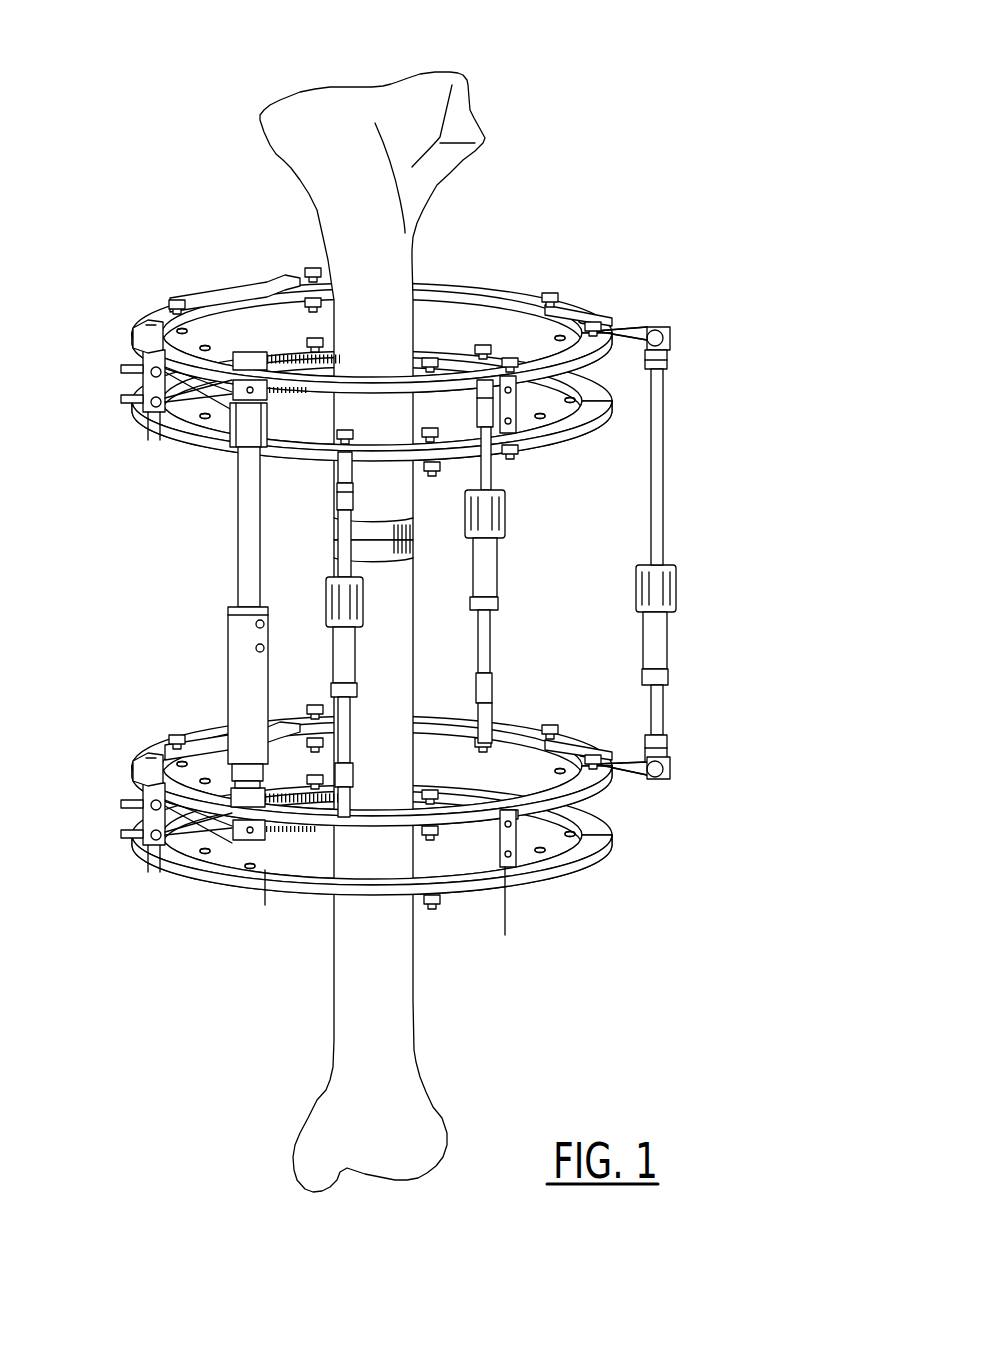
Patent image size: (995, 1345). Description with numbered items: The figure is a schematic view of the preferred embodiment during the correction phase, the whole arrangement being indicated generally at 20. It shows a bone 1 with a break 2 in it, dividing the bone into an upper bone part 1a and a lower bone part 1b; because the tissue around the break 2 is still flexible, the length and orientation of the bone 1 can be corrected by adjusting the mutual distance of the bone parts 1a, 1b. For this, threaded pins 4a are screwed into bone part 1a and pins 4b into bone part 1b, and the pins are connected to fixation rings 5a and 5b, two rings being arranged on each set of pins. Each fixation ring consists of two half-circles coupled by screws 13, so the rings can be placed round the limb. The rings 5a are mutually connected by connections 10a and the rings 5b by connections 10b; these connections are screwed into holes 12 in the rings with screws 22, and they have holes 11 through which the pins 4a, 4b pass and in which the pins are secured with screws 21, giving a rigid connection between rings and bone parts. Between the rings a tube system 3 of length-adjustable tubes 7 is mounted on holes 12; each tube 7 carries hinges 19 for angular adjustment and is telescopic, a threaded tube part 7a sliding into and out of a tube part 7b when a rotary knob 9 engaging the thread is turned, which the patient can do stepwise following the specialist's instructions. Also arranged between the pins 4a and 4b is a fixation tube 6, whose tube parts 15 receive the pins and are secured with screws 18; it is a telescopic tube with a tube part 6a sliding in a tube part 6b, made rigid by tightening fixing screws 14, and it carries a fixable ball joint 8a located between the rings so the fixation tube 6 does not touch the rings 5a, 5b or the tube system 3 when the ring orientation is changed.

The bone 1 is at (449, 630).
The bone part 1a is at (400, 262).
The bone part 1b is at (355, 985).
The break 2 is at (395, 540).
The tube system 3 is at (718, 485).
The pins 4a is at (121, 369).
The pins 4b is at (121, 804).
The fixation rings 5a is at (505, 290).
The fixation rings 5b is at (585, 780).
The fixation tube 6 is at (169, 617).
The tube part 6a is at (240, 535).
The tube part 6b is at (232, 680).
The length-adjustable tubes 7 is at (514, 598).
The tube part 7a is at (490, 465).
The tube part 7b is at (495, 555).
The ball joint 8a is at (240, 432).
The rotary knob 9 is at (676, 588).
The connections 10a is at (550, 320).
The connections 10b is at (150, 810).
The holes 11 is at (516, 400).
The holes 12 is at (215, 290).
The screws 13 is at (285, 240).
The fixing screws 14 is at (266, 646).
The tube parts 15 is at (250, 353).
The screws 18 is at (270, 393).
The hinges 19 is at (482, 385).
The external fixation device 20 is at (276, 83).
The screws 21 is at (163, 428).
The screws 22 is at (150, 340).